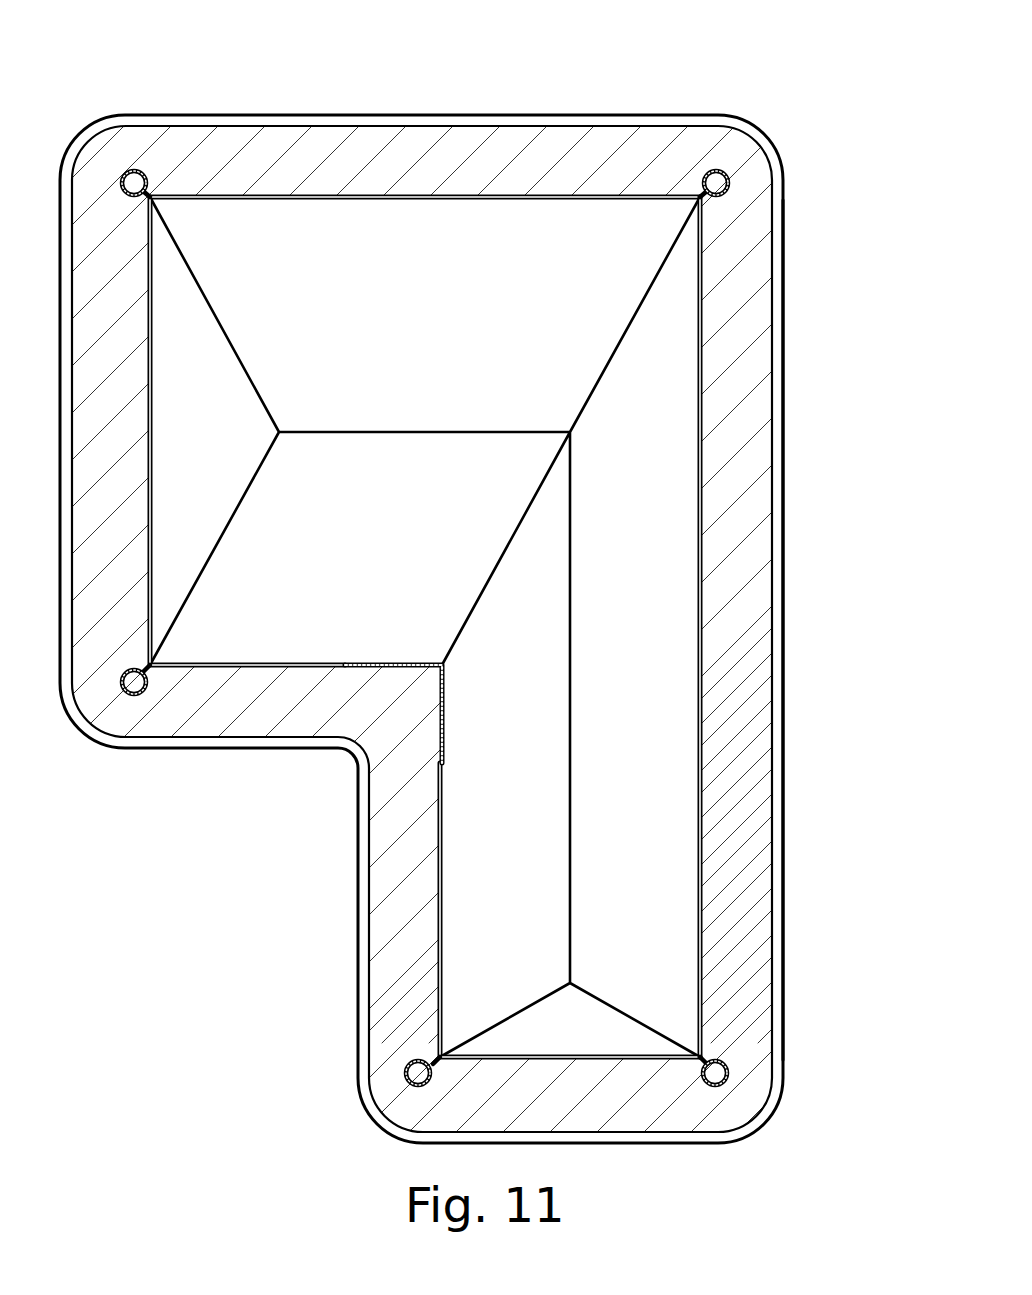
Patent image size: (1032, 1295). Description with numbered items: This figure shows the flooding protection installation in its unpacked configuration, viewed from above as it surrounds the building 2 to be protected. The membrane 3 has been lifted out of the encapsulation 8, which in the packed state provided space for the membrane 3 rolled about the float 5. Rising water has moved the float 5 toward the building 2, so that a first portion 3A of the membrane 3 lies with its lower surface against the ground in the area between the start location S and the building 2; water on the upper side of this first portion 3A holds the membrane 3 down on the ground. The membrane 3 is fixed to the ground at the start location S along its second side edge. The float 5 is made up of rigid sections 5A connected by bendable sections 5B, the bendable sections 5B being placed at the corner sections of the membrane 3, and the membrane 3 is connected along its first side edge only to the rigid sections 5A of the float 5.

The building 2 is at (418, 370).
The membrane 3 is at (440, 148).
The first portion of the membrane 3A is at (552, 178).
The float 5 is at (401, 199).
The rigid sections 5A is at (730, 176).
The bendable sections 5B is at (702, 762).
The encapsulation 8 is at (735, 118).
The start location S is at (785, 842).